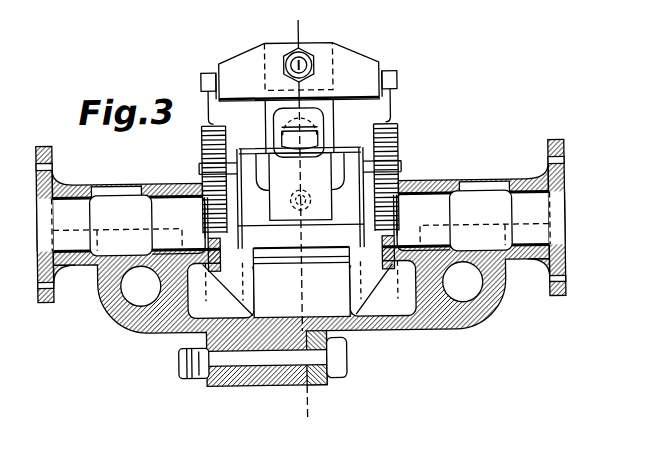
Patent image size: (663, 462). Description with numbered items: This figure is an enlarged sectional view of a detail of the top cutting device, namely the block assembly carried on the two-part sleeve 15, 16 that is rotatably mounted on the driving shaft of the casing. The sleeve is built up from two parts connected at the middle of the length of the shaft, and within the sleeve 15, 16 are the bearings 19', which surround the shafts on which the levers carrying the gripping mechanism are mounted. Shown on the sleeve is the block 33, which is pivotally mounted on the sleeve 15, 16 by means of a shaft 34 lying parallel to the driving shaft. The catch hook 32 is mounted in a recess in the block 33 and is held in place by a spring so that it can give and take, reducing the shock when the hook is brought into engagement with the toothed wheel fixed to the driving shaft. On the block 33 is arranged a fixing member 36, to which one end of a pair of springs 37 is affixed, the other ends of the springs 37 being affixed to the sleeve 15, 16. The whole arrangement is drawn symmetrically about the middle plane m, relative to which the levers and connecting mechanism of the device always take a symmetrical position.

The sleeve part 15 is at (97, 285).
The sleeve part 16 is at (507, 280).
The bearings 19' is at (302, 291).
The catch hook 32 is at (313, 135).
The block 33 is at (275, 108).
The shaft 34 is at (402, 147).
The fixing member 36 is at (348, 57).
The springs 37 is at (202, 147).
The middle plane m is at (302, 220).